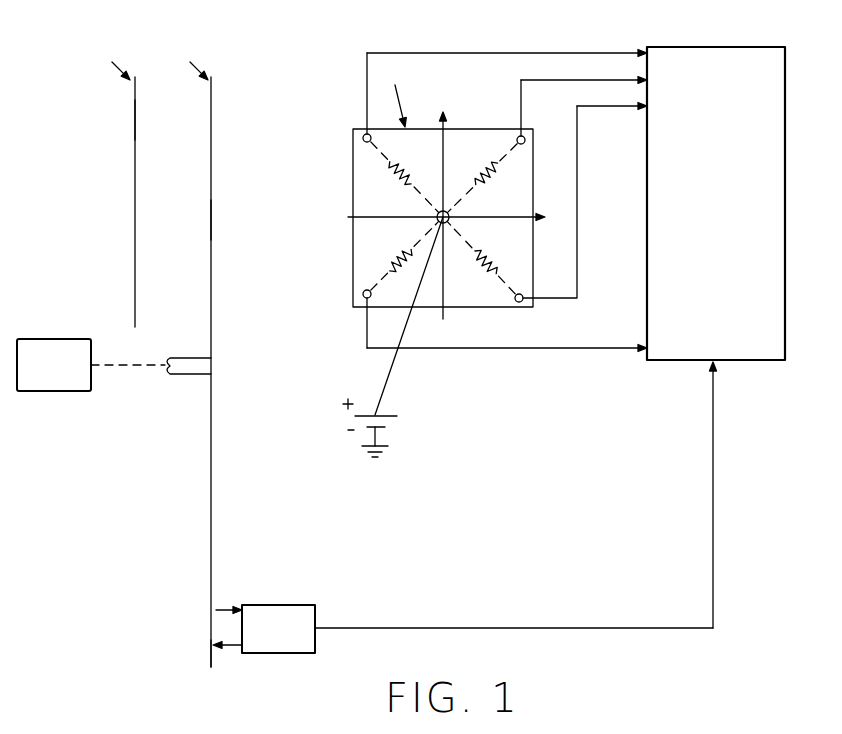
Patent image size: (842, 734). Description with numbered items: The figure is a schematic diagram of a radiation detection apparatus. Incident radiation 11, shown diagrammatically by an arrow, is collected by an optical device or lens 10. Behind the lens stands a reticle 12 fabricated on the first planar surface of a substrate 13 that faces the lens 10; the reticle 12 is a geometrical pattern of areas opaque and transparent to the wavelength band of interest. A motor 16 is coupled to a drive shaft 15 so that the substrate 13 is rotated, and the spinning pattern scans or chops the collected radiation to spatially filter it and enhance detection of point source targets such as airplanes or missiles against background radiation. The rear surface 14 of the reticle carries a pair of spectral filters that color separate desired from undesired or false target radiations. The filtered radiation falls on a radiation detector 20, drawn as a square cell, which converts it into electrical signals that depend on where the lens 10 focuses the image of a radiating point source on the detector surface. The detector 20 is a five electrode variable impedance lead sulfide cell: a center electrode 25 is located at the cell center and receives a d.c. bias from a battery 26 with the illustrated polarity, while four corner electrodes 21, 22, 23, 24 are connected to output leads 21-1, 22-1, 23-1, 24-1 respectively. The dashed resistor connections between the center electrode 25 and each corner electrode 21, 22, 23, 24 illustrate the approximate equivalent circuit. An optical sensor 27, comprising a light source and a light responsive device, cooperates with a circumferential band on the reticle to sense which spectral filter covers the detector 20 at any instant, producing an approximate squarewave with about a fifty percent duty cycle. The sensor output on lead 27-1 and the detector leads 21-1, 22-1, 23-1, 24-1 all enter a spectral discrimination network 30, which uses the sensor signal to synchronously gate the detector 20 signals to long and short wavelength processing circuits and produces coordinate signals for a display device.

The lens 10 is at (142, 80).
The incident radiation 11 is at (124, 118).
The reticle 12 is at (200, 114).
The substrate 13 is at (208, 681).
The rear surface 14 is at (213, 221).
The drive shaft 15 is at (183, 353).
The motor 16 is at (77, 339).
The radiation detector 20 is at (353, 172).
The corner electrode 21 is at (356, 130).
The corner electrode 22 is at (531, 136).
The corner electrode 23 is at (356, 288).
The corner electrode 24 is at (512, 306).
The center electrode 25 is at (452, 215).
The battery 26 is at (398, 411).
The optical sensor 27 is at (300, 606).
The spectral discrimination network 30 is at (701, 47).
The output lead 21-1 is at (548, 53).
The output lead 22-1 is at (567, 80).
The output lead 23-1 is at (569, 348).
The output lead 24-1 is at (581, 106).
The lead 27-1 is at (527, 628).